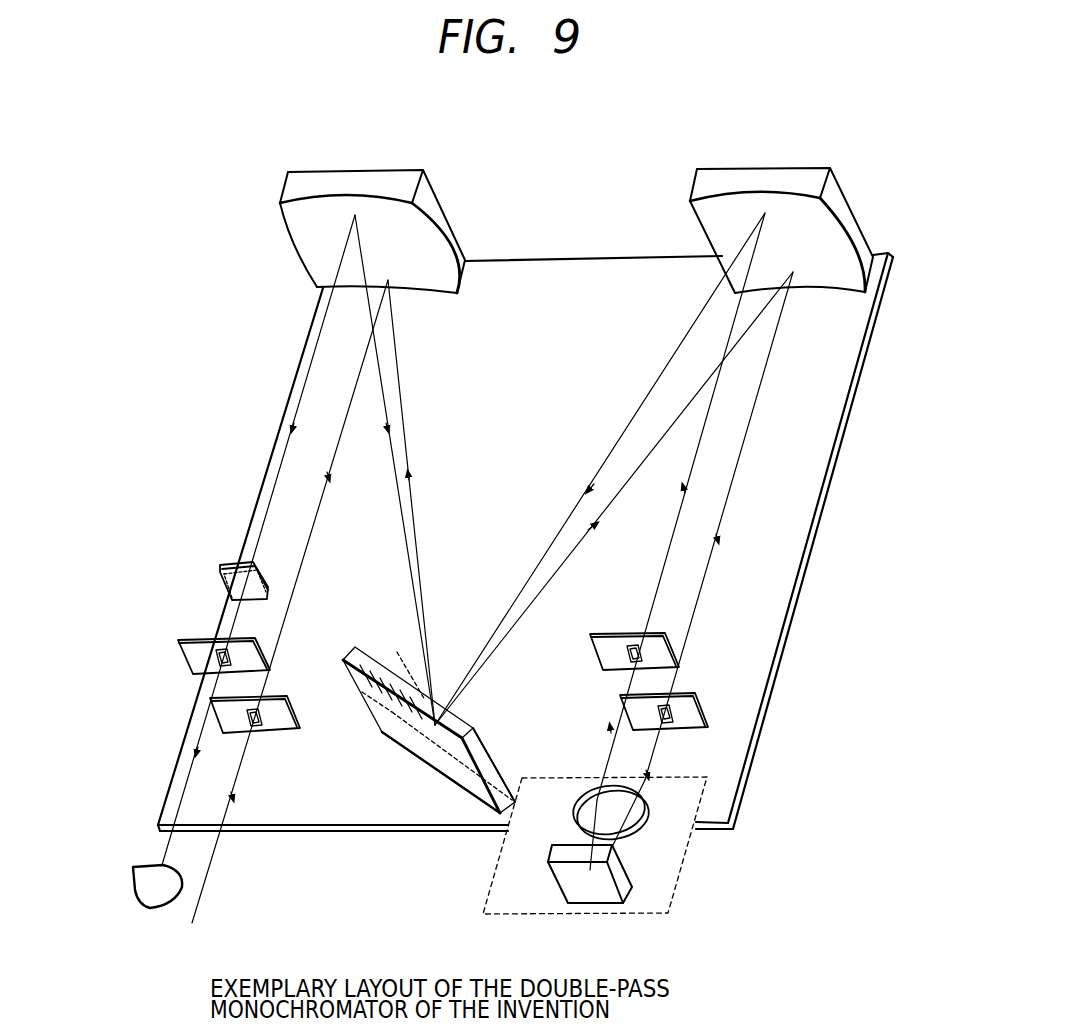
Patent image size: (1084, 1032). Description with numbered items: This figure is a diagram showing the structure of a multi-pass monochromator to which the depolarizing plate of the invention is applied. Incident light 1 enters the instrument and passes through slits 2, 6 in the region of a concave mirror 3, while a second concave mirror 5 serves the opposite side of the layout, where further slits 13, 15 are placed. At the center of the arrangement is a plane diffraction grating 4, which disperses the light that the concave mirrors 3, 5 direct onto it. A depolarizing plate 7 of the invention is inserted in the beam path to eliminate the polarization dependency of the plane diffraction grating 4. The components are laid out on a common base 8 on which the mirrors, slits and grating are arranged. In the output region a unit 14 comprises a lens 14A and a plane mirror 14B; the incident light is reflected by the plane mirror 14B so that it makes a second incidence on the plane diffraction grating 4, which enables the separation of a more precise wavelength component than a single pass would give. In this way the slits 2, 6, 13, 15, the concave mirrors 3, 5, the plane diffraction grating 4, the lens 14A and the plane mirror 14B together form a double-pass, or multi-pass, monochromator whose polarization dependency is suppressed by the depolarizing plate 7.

The incident light 1 is at (147, 868).
The slit 2 is at (195, 648).
The concave mirror 3 is at (332, 178).
The plane diffraction grating 4 is at (485, 792).
The concave mirror 5 is at (765, 175).
The slit 6 is at (218, 712).
The depolarizing plate 7 is at (225, 567).
The base plate 8 is at (782, 588).
The slit 13 is at (663, 655).
The light receiving unit 14 is at (637, 853).
The lens 14A is at (637, 830).
The plane mirror 14B is at (630, 887).
The slit 15 is at (695, 720).